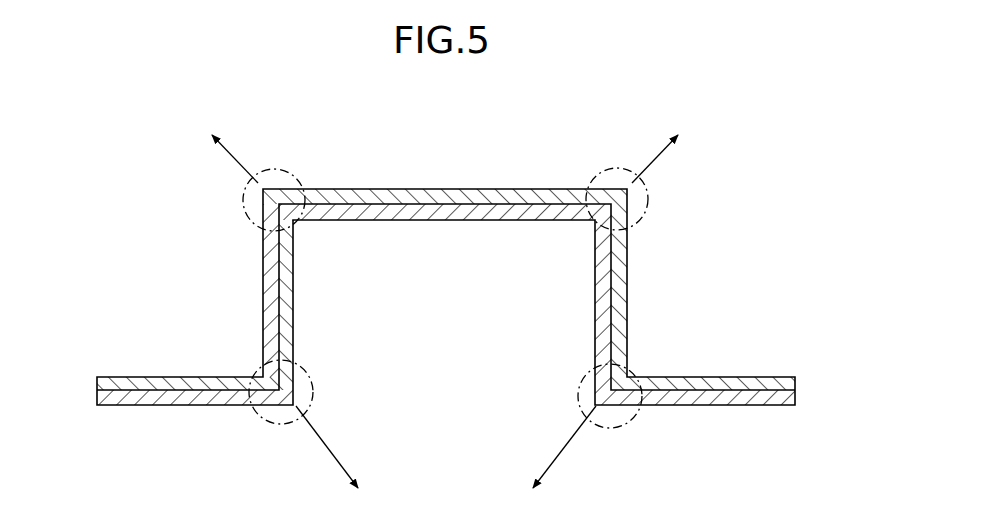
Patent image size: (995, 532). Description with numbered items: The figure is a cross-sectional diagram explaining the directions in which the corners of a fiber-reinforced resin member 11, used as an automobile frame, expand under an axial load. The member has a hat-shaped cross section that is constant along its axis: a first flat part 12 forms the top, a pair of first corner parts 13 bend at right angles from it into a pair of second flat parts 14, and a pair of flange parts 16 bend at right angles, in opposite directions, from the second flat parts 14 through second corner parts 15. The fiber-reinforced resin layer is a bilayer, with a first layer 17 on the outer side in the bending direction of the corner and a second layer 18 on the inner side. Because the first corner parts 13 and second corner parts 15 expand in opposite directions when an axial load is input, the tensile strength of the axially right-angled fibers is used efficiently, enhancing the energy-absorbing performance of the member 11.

The fiber-reinforced resin member 11 is at (496, 154).
The first flat part 12 is at (432, 189).
The first corner part 13 is at (264, 193).
The second flat part 14 is at (266, 303).
The second corner part 15 is at (302, 407).
The flange part 16 is at (170, 406).
The first layer 17 is at (360, 189).
The second layer 18 is at (376, 221).